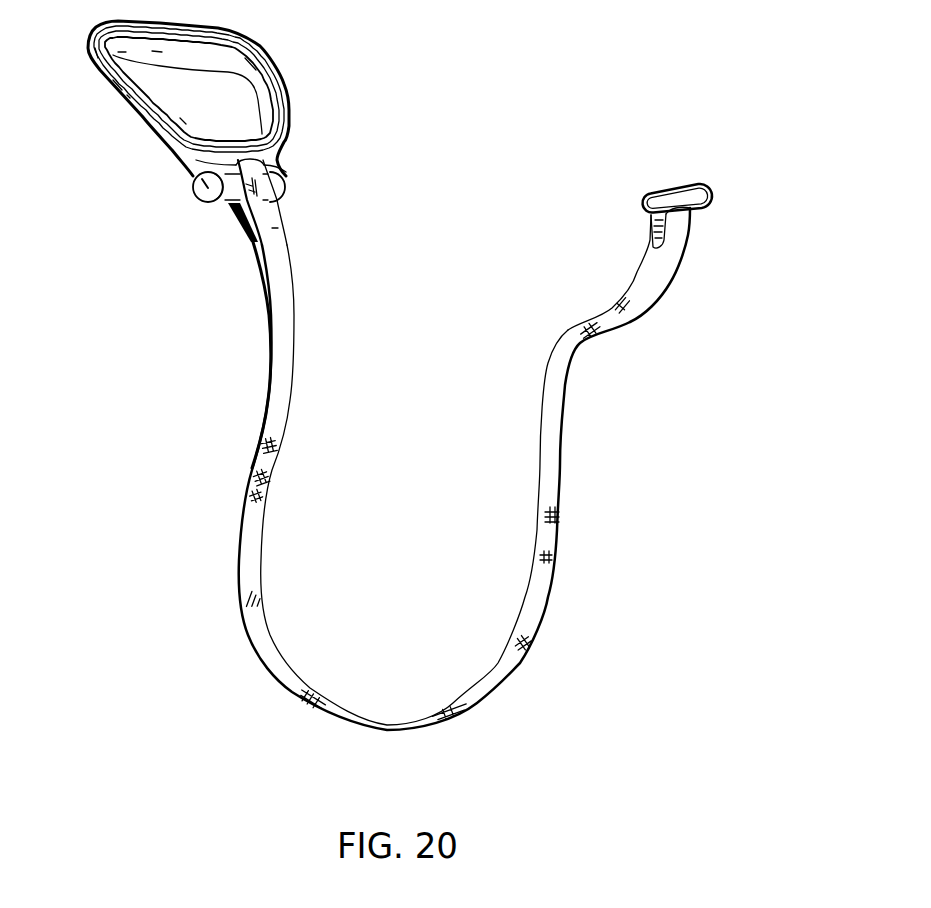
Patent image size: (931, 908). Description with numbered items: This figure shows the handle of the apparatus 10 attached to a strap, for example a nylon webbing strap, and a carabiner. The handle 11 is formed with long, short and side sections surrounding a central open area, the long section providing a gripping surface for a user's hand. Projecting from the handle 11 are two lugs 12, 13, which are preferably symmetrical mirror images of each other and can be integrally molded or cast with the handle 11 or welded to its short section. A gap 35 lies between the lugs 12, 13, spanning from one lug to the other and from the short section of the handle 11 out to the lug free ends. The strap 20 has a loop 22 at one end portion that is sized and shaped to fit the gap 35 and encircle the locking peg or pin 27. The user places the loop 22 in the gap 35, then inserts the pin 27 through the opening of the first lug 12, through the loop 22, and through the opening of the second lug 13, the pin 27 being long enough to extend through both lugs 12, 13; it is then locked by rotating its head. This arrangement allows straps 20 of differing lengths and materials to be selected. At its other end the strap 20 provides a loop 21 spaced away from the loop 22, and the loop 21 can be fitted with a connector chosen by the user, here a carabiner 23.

The apparatus 10 is at (594, 62).
The handle 11 is at (276, 50).
The lug 12 is at (223, 208).
The lug 13 is at (284, 209).
The strap 20 is at (515, 445).
The loop 21 is at (672, 277).
The loop 22 is at (278, 227).
The carabiner 23 is at (715, 203).
The locking pin or peg 27 is at (184, 199).
The gap 35 is at (248, 164).